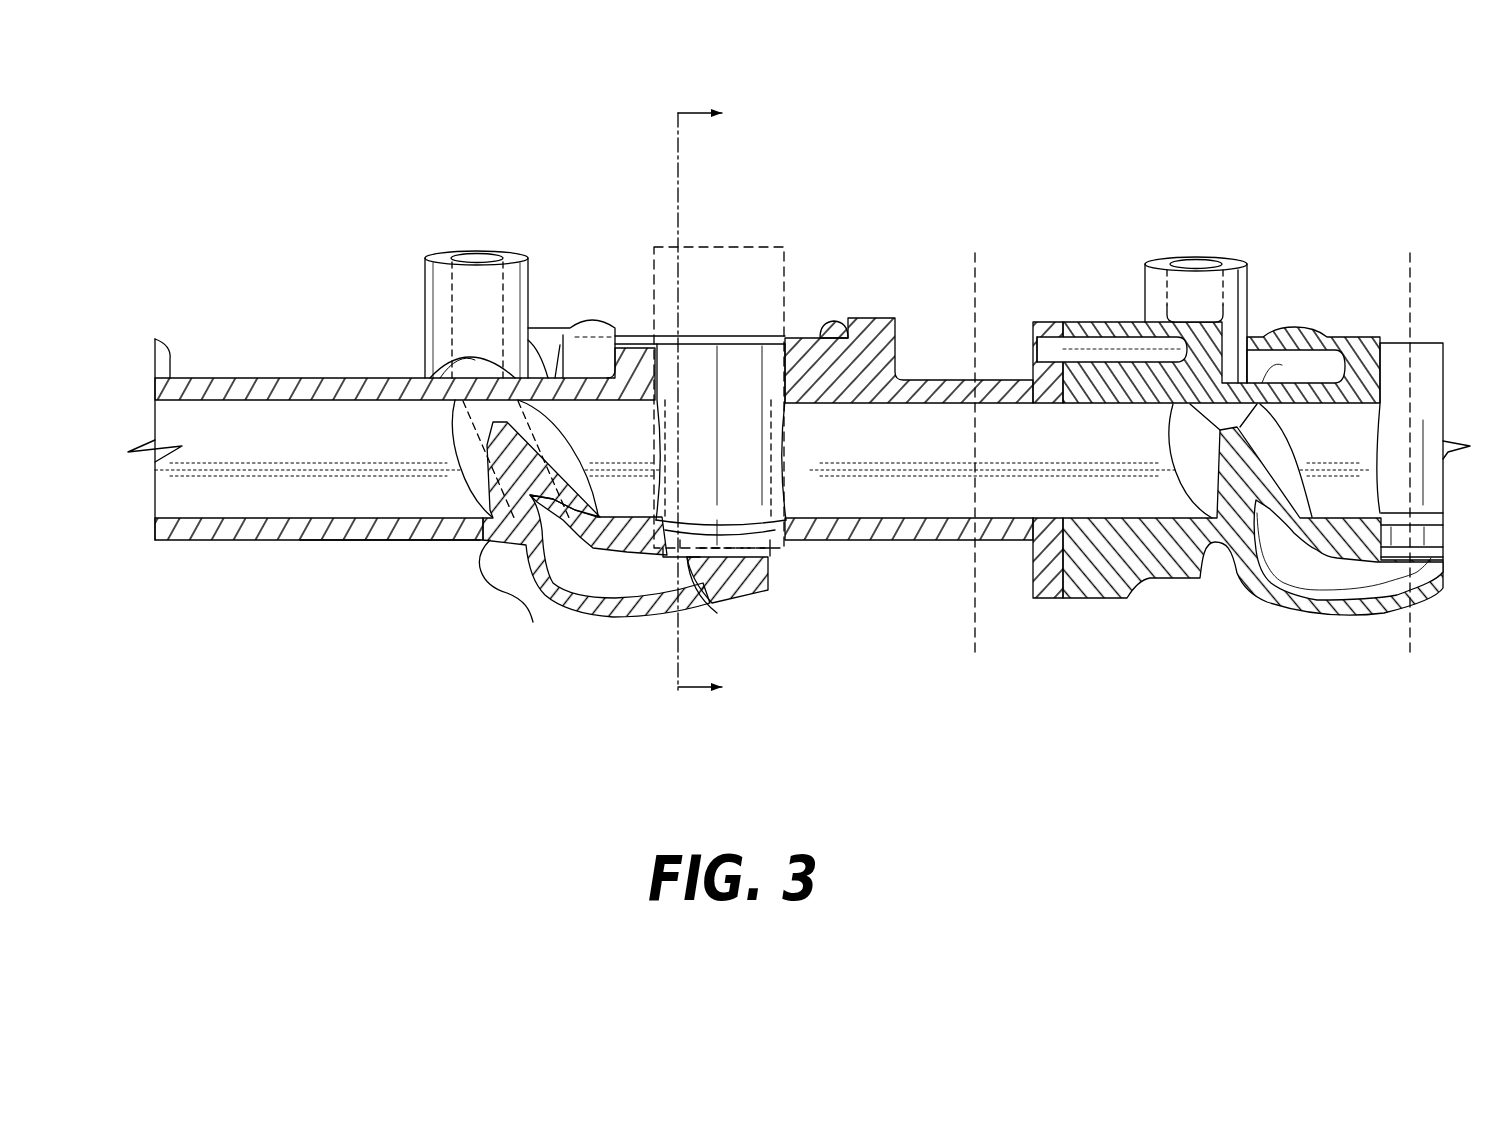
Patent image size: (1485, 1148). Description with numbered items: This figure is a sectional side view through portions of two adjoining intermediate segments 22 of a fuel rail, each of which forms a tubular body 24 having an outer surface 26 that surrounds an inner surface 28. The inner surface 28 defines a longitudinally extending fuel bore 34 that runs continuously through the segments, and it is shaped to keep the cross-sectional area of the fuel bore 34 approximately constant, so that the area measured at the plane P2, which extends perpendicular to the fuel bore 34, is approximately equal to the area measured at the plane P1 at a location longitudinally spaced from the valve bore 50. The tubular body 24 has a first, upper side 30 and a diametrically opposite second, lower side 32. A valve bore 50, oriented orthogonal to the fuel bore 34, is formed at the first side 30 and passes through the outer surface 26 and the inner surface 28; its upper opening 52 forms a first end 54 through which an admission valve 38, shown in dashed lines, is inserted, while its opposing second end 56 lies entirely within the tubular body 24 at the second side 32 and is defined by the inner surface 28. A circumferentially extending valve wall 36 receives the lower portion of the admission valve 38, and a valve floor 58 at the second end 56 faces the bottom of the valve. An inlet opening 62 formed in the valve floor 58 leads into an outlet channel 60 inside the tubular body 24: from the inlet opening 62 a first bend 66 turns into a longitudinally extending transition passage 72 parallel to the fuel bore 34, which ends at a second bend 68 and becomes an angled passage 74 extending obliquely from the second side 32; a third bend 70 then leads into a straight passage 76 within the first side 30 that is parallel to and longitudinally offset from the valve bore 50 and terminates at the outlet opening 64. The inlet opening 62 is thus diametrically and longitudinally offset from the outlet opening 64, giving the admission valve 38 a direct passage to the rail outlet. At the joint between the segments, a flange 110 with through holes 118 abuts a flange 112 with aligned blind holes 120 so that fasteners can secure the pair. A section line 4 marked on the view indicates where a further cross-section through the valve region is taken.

The intermediate segment 22 is at (313, 311).
The tubular body 24 is at (347, 558).
The outer surface 26 is at (247, 377).
The inner surface 28 is at (187, 400).
The first side 30 is at (137, 371).
The second side 32 is at (188, 556).
The fuel bore 34 is at (222, 447).
The valve wall 36 is at (775, 535).
The admission valve 38 is at (650, 265).
The valve bore 50 is at (750, 336).
The upper opening 52 is at (690, 333).
The first end 54 is at (738, 362).
The second end 56 is at (777, 557).
The valve floor 58 is at (766, 582).
The outlet channel 60 is at (580, 617).
The inlet opening 62 is at (742, 586).
The outlet opening 64 is at (478, 252).
The first bend 66 is at (713, 578).
The second bend 68 is at (557, 547).
The third bend 70 is at (462, 365).
The transition passage 72 is at (615, 568).
The angled passage 74 is at (507, 513).
The straight passage 76 is at (448, 315).
The flange 110 is at (1043, 321).
The flange 112 is at (1122, 321).
The through holes 118 is at (1040, 352).
The blind holes 120 is at (1083, 350).
The plane P1 is at (972, 262).
The plane P2 is at (1408, 265).
The section line 4- 4 is at (714, 400).